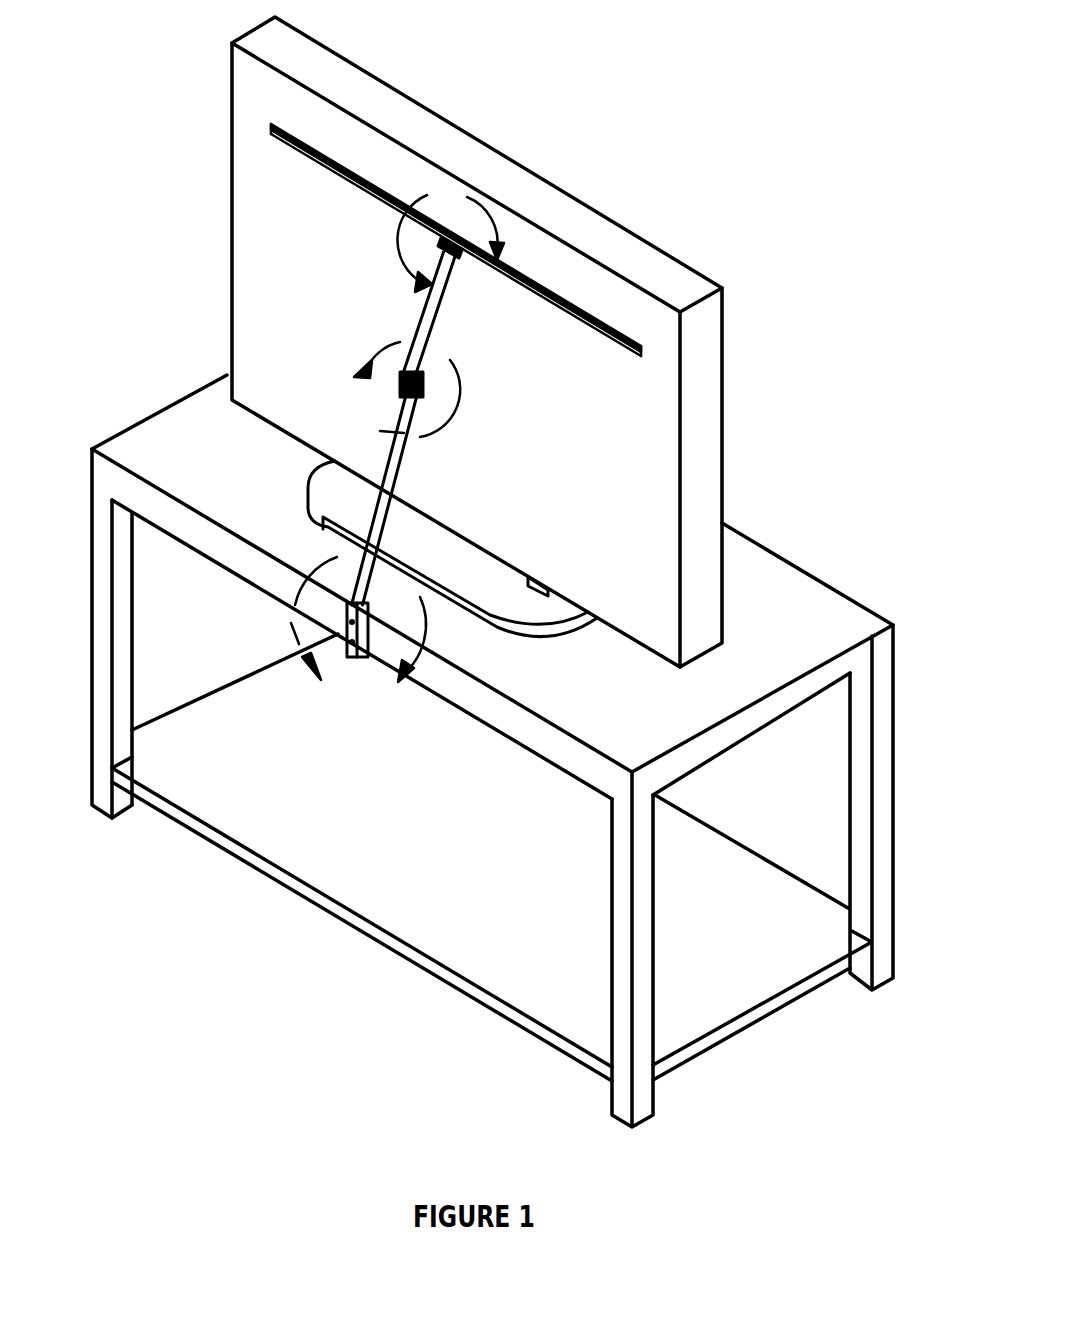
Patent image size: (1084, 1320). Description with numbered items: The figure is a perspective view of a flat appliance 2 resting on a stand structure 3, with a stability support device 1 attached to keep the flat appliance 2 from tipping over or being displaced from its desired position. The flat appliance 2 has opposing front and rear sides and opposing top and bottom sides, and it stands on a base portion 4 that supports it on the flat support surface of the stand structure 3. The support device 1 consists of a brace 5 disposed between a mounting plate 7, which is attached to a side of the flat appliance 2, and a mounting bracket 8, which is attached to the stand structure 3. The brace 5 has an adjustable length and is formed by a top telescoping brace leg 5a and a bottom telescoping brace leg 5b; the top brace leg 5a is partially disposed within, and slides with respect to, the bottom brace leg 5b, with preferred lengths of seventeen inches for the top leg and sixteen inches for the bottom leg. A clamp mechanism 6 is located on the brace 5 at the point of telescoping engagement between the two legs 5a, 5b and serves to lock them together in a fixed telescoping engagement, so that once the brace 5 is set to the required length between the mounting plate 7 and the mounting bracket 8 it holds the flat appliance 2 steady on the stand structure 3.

The support device 1 is at (112, 23).
The flat appliance 2 is at (718, 309).
The stand structure 3 is at (858, 613).
The base portion 4 is at (552, 640).
The brace 5 is at (441, 421).
The top telescoping brace leg 5a is at (436, 333).
The bottom telescoping brace leg 5b is at (398, 491).
The clamp mechanism 6 is at (403, 388).
The mounting plate 7 is at (546, 285).
The mounting bracket 8 is at (363, 653).